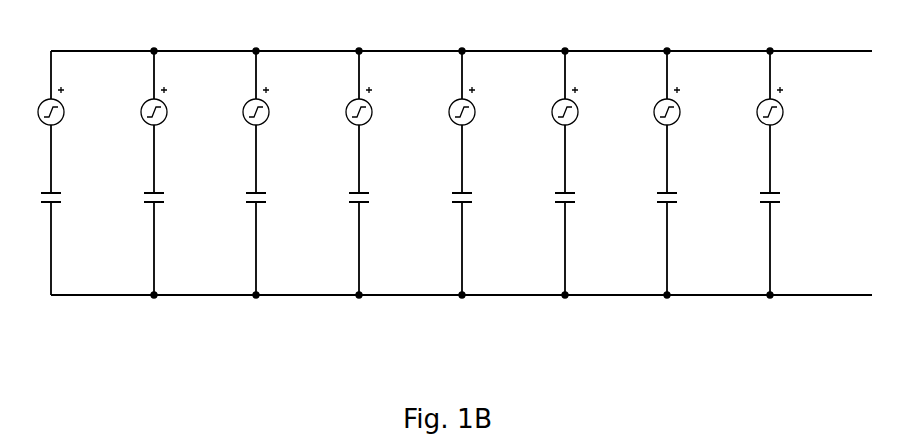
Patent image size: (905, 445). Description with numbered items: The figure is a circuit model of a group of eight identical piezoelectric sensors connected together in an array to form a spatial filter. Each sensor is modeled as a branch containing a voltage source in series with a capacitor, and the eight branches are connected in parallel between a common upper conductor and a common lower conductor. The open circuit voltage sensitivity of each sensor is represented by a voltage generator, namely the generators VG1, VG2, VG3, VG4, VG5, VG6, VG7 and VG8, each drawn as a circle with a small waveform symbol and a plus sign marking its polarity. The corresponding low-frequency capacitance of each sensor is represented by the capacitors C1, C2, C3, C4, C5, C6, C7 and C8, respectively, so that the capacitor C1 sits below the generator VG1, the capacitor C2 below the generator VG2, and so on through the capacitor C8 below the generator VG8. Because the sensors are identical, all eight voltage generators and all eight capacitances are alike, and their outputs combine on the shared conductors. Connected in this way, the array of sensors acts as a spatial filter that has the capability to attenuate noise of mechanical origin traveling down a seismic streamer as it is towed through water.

The open circuit voltage sensitivity VG1 is at (74, 105).
The open circuit voltage sensitivity VG2 is at (177, 105).
The open circuit voltage sensitivity VG3 is at (279, 105).
The open circuit voltage sensitivity VG4 is at (382, 105).
The open circuit voltage sensitivity VG5 is at (485, 105).
The open circuit voltage sensitivity VG6 is at (588, 105).
The open circuit voltage sensitivity VG7 is at (690, 105).
The open circuit voltage sensitivity VG8 is at (793, 105).
The low-frequency capacitance C1 is at (42, 201).
The low-frequency capacitance C2 is at (145, 201).
The low-frequency capacitance C3 is at (247, 201).
The low-frequency capacitance C4 is at (350, 201).
The low-frequency capacitance C5 is at (453, 201).
The low-frequency capacitance C6 is at (556, 201).
The low-frequency capacitance C7 is at (658, 201).
The low-frequency capacitance C8 is at (761, 201).